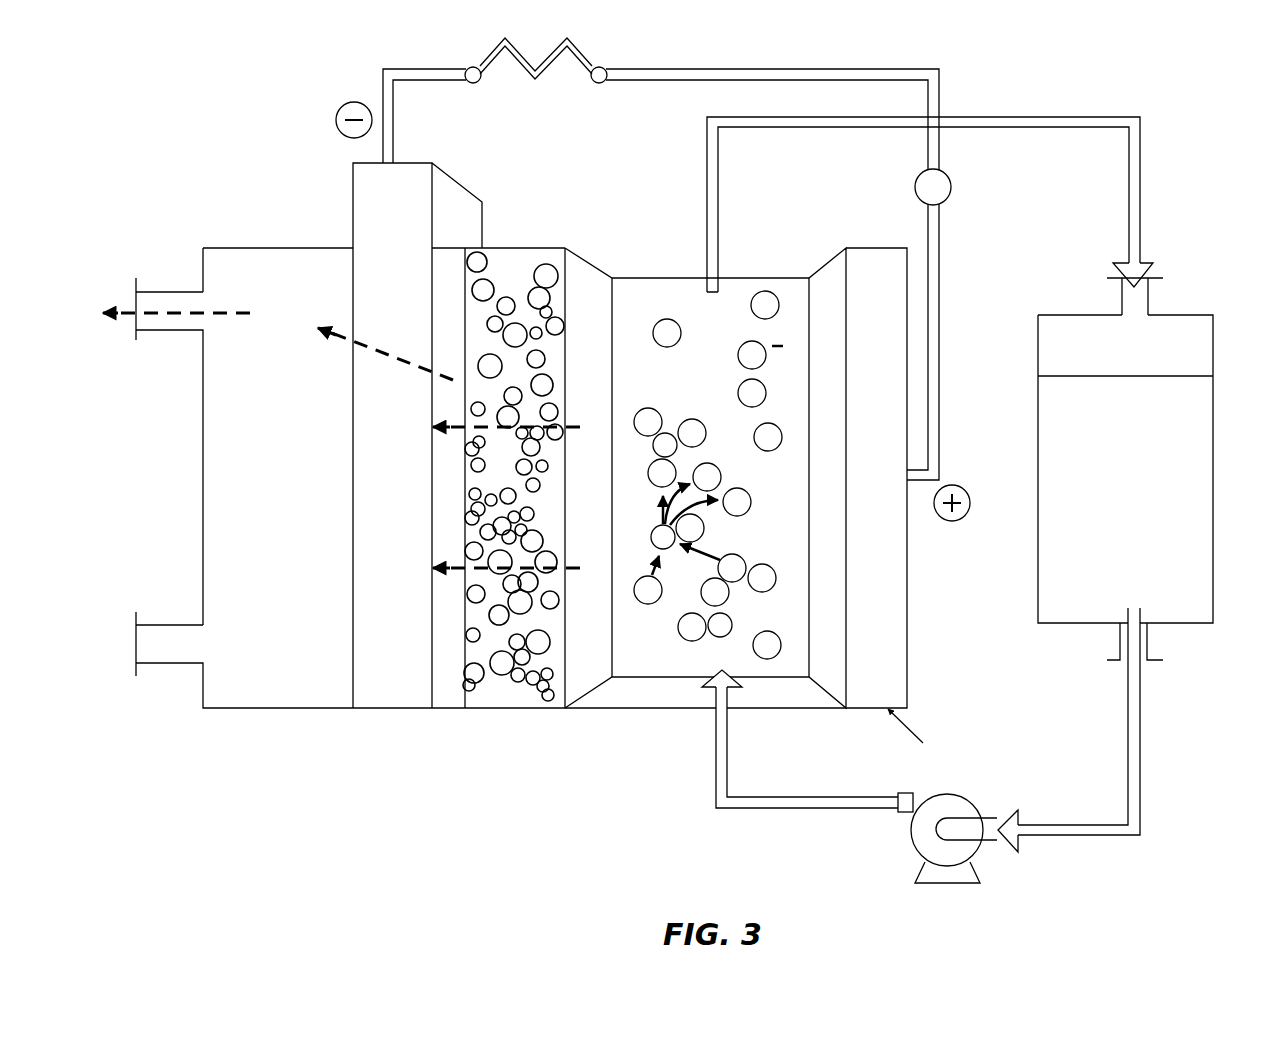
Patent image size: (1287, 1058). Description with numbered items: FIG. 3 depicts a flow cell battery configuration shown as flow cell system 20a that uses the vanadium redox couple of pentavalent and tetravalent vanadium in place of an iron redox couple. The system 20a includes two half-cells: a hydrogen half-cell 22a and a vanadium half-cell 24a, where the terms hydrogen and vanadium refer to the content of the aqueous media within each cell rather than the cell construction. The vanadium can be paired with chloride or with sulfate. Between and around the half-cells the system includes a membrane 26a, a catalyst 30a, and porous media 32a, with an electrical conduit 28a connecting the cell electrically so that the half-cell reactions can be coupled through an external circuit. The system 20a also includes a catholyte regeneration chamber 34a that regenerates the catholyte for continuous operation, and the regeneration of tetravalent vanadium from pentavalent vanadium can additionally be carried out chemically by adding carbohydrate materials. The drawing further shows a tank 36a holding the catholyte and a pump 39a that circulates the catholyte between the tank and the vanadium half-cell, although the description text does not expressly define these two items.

The flow cell system 20a is at (1170, 74).
The hydrogen half-cell 22a is at (280, 247).
The vanadium half-cell 24a is at (773, 257).
The membrane 26a is at (508, 704).
The electrical conduit 28a is at (688, 65).
The catalyst 30a is at (443, 713).
The porous media 32a is at (380, 696).
The catholyte regeneration chamber 34a is at (1185, 631).
The catholyte tank 36a is at (1068, 312).
The pump 39a is at (947, 886).